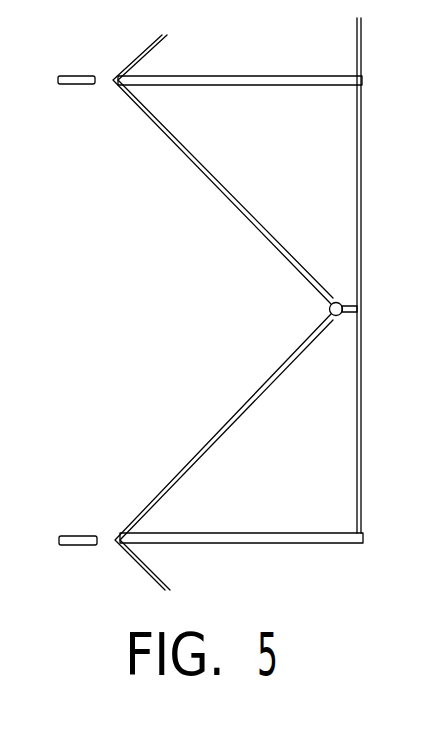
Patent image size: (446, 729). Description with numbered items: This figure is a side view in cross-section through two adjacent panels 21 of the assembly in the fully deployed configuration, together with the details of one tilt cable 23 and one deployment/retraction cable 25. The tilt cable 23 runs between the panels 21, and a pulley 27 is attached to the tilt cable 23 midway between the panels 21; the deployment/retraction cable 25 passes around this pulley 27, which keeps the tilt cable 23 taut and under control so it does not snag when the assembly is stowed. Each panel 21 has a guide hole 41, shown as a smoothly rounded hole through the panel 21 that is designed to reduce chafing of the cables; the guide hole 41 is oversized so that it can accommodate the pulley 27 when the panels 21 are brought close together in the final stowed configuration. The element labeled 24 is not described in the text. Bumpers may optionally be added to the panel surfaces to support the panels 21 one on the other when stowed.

The panel 21 is at (292, 73).
The tilt cable 23 is at (362, 398).
The bottom cross bar 24 is at (363, 533).
The deployment/retraction cable 25 is at (250, 213).
The pulley 27 is at (329, 309).
The guide hole 41 is at (79, 74).